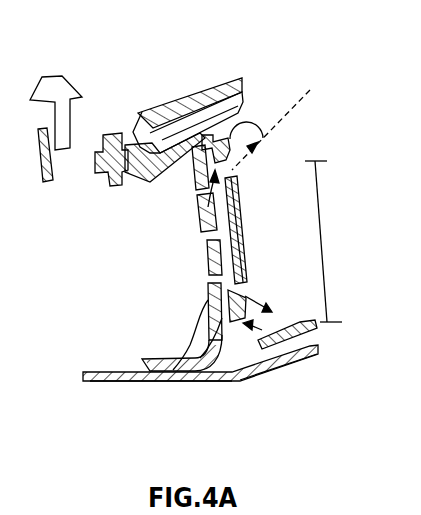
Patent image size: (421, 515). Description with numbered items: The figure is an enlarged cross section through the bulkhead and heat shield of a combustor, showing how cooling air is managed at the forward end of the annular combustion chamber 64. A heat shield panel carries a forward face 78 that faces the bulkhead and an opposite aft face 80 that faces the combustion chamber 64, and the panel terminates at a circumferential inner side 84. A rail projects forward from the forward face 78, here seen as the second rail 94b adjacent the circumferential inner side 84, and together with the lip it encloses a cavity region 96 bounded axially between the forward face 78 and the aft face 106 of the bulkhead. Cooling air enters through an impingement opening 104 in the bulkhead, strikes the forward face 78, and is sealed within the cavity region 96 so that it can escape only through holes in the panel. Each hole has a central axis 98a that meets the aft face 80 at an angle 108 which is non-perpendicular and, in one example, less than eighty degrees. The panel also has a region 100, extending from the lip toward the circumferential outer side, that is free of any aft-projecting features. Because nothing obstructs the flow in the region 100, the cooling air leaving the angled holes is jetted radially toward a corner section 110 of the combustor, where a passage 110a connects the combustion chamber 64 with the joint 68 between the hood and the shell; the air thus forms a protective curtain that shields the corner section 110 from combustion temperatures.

The annular combustion chamber 64 is at (307, 42).
The joint 68 is at (142, 382).
The forward face 78 is at (238, 203).
The aft face 80 is at (242, 252).
The circumferential inner side 84 is at (266, 332).
The second rail 94b is at (210, 330).
The cavity region 96 is at (205, 210).
The central axis 98a is at (282, 119).
The region 100 is at (323, 245).
The impingement opening 104 is at (210, 282).
The aft face of the bulkhead 106 is at (207, 252).
The angle 108 is at (253, 137).
The corner section 110 is at (227, 382).
The passage 110a is at (237, 357).